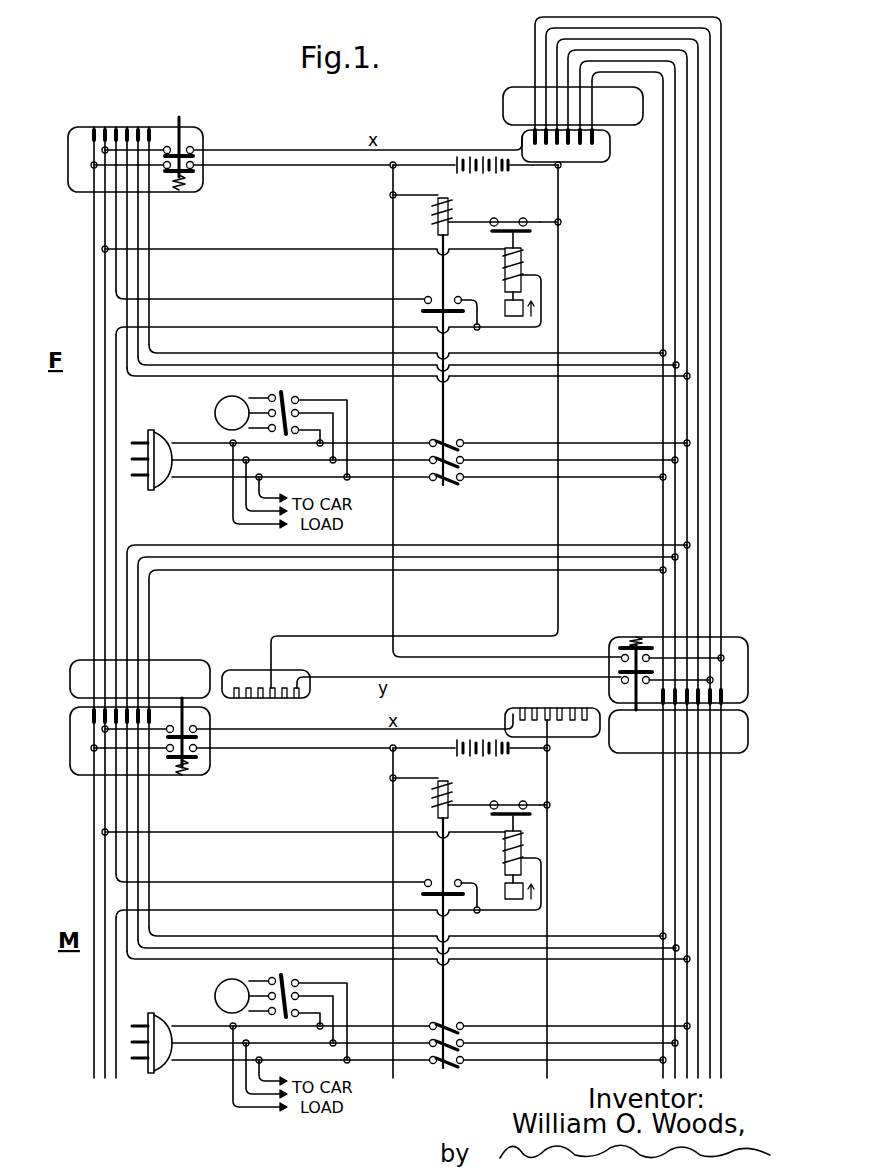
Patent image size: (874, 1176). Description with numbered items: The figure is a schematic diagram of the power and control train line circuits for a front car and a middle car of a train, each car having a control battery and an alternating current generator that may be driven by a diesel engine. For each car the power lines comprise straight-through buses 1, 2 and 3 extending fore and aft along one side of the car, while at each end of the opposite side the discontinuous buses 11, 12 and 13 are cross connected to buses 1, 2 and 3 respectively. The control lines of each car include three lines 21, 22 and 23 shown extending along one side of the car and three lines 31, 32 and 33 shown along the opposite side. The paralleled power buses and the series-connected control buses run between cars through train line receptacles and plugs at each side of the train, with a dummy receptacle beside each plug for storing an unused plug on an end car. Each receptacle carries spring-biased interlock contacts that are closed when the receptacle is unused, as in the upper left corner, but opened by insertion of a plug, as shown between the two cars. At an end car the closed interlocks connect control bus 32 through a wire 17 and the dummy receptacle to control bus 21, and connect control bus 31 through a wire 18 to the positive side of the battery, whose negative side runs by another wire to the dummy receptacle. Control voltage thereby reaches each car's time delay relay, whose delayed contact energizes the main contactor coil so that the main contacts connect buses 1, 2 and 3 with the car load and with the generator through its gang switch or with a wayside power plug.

The straight-through bus 1 is at (687, 199).
The straight-through bus 2 is at (675, 182).
The straight-through bus 3 is at (663, 165).
The discontinuous bus 11 is at (127, 204).
The discontinuous bus 12 is at (138, 222).
The discontinuous bus 13 is at (149, 240).
The wire 17 is at (320, 148).
The wire 18 is at (320, 168).
The control line 21 is at (721, 97).
The control line 22 is at (710, 115).
The control line 23 is at (698, 134).
The control line 31 is at (94, 204).
The control line 32 is at (105, 222).
The control line 33 is at (116, 240).